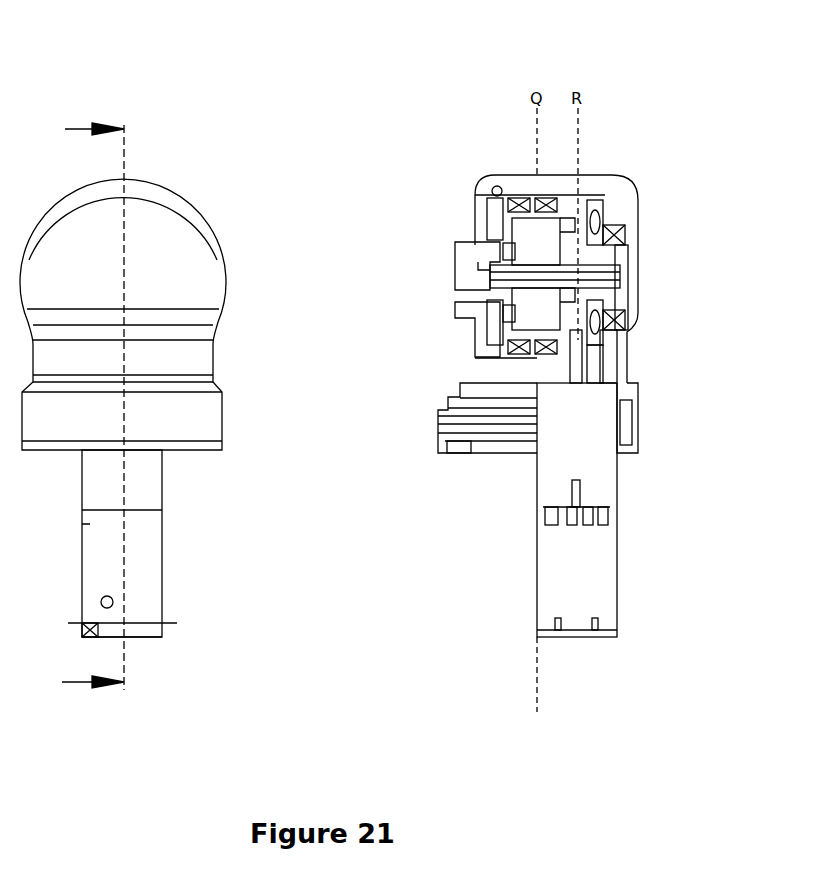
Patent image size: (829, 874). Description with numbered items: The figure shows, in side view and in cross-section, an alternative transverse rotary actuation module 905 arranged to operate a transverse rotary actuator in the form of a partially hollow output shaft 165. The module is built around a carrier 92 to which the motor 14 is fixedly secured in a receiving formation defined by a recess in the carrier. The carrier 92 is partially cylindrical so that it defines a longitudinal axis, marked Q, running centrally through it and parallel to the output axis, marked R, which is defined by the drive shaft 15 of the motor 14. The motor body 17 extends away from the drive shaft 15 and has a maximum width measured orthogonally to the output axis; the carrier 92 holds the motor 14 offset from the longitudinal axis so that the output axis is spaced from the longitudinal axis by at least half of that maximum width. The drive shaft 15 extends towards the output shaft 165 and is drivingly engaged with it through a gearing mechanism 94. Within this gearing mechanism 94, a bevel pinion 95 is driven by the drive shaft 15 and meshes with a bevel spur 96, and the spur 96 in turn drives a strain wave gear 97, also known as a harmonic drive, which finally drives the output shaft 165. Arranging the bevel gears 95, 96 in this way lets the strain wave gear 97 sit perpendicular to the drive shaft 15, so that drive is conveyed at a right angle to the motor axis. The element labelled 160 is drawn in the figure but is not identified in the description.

The transverse rotary actuation module 905 is at (247, 142).
The carrier 92 is at (207, 291).
The motor 14 is at (161, 578).
The output shaft 165 is at (455, 306).
The gearing mechanism 94 is at (480, 363).
The bearing 160 is at (492, 433).
The strain wave gear 97 is at (598, 258).
The bevel spur 96 is at (622, 338).
The bevel pinion 95 is at (605, 358).
The drive shaft 15 is at (590, 381).
The body 17 is at (591, 471).